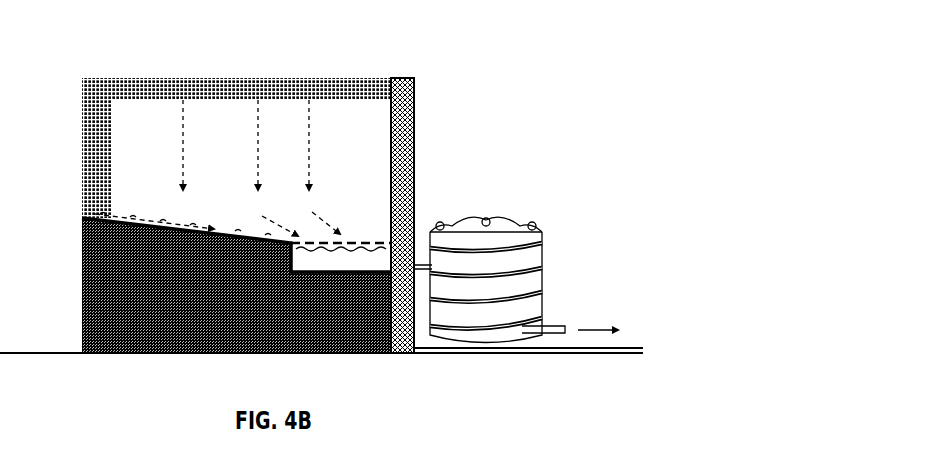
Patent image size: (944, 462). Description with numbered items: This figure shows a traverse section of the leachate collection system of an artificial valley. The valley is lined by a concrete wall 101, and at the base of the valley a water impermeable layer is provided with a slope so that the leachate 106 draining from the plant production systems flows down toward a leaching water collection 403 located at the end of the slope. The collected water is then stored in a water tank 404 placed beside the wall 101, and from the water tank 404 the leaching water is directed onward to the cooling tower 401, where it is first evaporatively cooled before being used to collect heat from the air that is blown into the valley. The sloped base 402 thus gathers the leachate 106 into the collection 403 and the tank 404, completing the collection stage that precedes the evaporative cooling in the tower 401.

The concrete wall 101 is at (402, 72).
The leachate 106 is at (311, 136).
The cooling tower 401 is at (590, 328).
The sloped ground surface 402 is at (82, 217).
The leaching water collection 403 is at (374, 256).
The water tank 404 is at (525, 292).